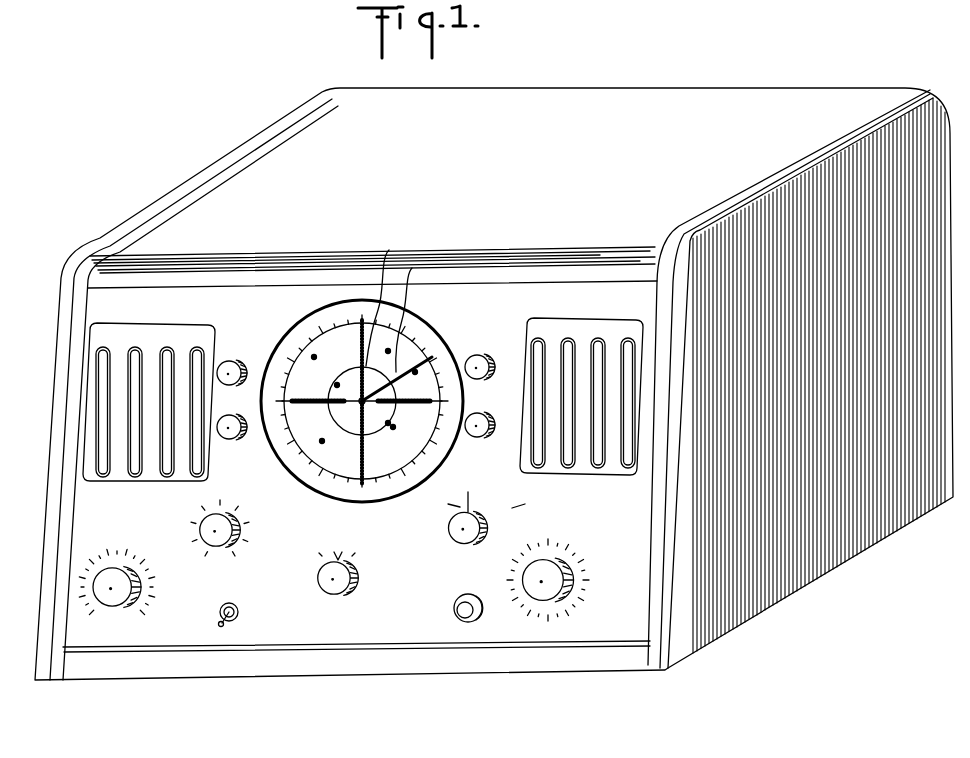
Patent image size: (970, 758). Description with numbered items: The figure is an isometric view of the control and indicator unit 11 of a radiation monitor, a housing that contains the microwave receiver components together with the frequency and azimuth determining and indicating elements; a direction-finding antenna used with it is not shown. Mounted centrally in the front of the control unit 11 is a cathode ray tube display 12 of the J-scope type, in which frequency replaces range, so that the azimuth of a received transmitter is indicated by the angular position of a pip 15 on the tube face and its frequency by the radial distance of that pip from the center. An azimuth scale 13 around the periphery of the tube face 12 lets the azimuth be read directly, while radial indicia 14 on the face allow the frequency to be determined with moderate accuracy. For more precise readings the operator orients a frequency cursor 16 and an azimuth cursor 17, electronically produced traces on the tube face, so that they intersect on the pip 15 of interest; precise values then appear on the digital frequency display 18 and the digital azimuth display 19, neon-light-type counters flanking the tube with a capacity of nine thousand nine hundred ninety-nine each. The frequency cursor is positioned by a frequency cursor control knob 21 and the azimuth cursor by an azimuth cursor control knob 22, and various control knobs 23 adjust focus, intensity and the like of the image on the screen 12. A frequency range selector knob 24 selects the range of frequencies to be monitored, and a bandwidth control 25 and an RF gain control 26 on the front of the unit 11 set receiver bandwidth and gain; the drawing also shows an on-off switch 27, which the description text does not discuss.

The control and indicator unit 11 is at (203, 206).
The cathode ray tube display 12 is at (408, 347).
The azimuth scale 13 is at (405, 330).
The radial indicia 14 is at (362, 362).
The pip 15 is at (322, 441).
The frequency cursor 16 is at (386, 428).
The azimuth cursor 17 is at (410, 371).
The digital frequency display 18 is at (192, 323).
The digital azimuth display 19 is at (543, 317).
The frequency cursor control knob 21 is at (118, 572).
The azimuth cursor control knob 22 is at (582, 558).
The control knobs 23 is at (240, 360).
The frequency range selector knob 24 is at (352, 578).
The bandwidth control 25 is at (458, 529).
The RF gain control 26 is at (256, 521).
The on-off switch 27 is at (239, 610).